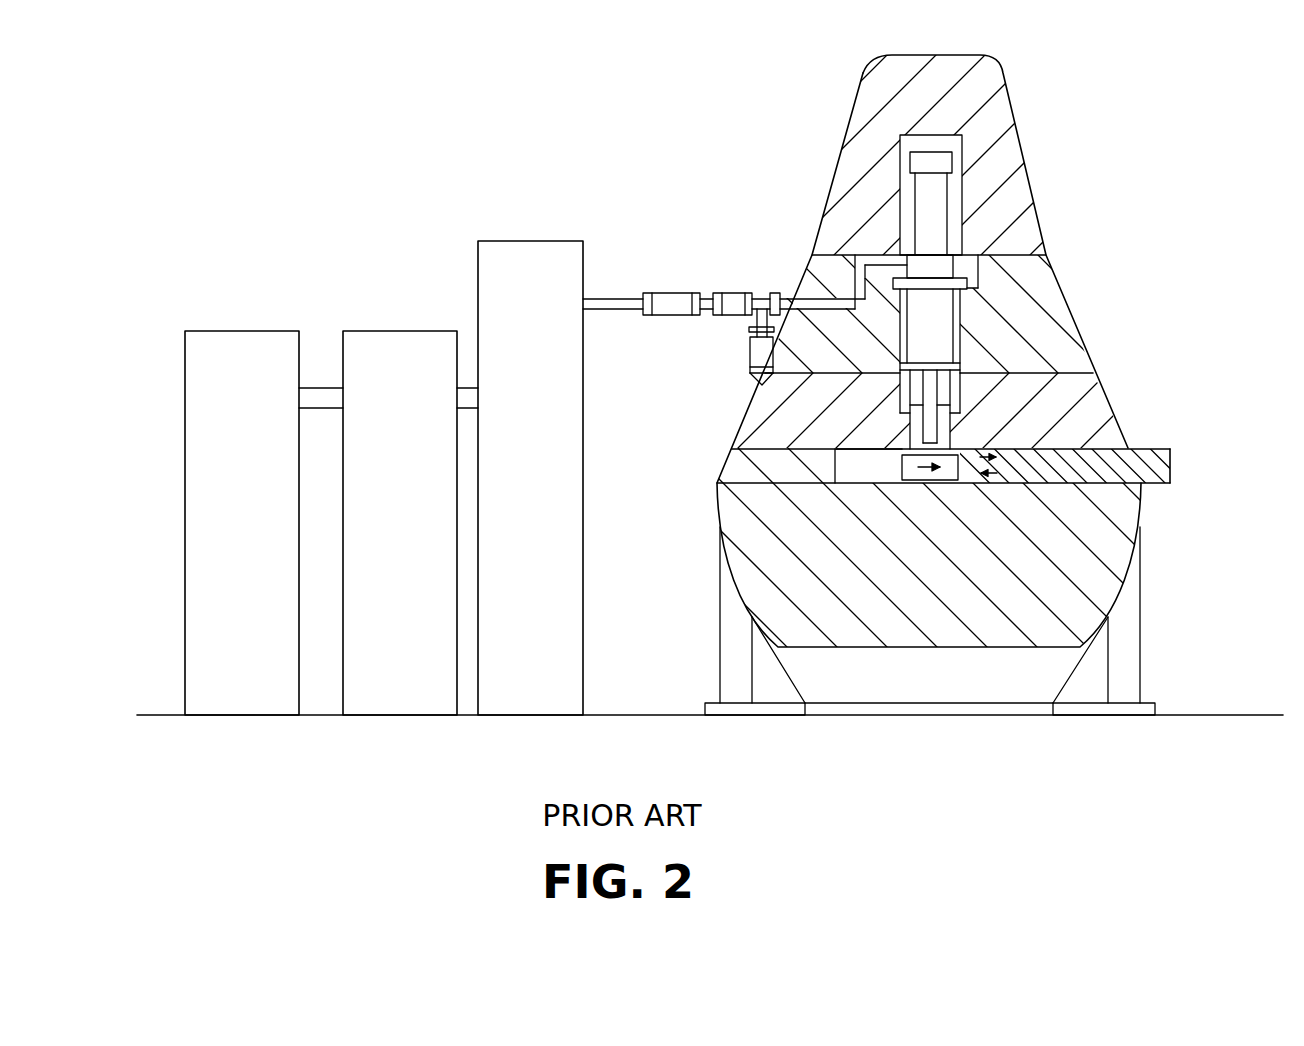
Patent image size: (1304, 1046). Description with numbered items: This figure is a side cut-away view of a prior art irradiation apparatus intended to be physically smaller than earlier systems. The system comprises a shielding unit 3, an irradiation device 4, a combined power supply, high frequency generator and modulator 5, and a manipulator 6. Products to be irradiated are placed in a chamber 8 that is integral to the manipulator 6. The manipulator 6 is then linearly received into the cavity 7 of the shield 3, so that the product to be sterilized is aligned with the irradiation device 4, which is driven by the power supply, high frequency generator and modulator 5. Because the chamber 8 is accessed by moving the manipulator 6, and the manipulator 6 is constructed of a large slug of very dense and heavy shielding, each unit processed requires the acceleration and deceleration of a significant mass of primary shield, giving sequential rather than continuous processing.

The shielding unit 3 is at (1003, 197).
The irradiation device 4 is at (933, 337).
The power supply, high frequency generator and modulator 5 is at (543, 263).
The manipulator 6 is at (1132, 460).
The cavity 7 is at (862, 456).
The chamber 8 is at (972, 448).